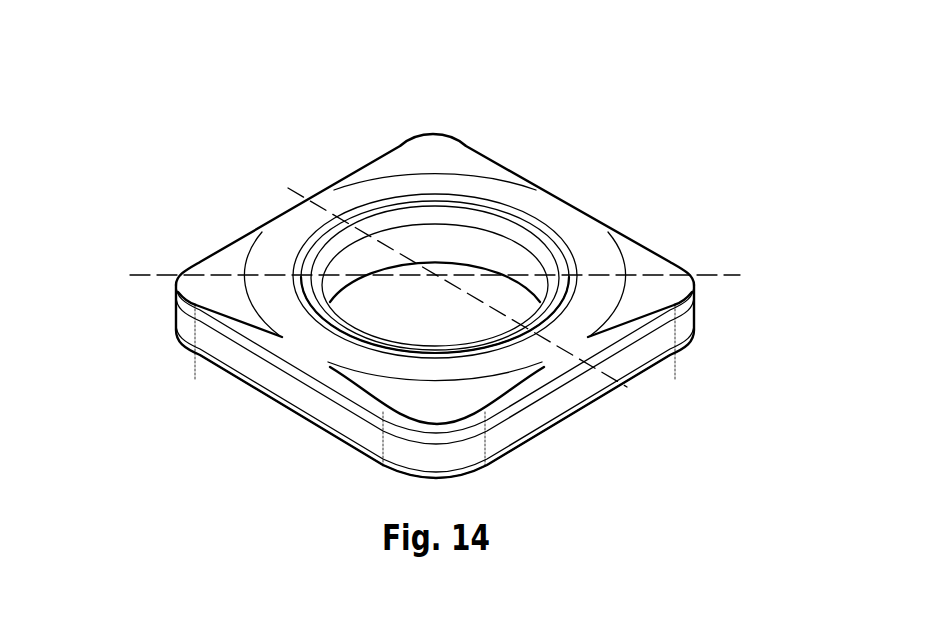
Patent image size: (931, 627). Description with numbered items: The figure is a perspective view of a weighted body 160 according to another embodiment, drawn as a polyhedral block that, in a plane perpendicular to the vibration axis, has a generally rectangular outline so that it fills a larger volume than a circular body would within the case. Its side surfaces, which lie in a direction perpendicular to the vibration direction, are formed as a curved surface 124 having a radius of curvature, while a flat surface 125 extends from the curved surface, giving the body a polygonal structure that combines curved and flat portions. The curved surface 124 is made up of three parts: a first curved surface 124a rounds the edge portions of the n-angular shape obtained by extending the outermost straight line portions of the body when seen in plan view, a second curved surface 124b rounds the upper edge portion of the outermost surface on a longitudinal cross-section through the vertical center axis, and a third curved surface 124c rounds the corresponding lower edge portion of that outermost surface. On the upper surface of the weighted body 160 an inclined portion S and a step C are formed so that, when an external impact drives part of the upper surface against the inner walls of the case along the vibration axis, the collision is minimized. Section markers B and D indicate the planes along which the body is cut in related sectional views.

The weighted body 160 is at (431, 86).
The flat surface 125 is at (494, 188).
The curved surface 124 is at (428, 391).
The first curved surface 124a is at (418, 461).
The second curved surface 124b is at (260, 357).
The third curved surface 124c is at (261, 396).
The step C is at (416, 141).
The inclined portion S is at (534, 228).
The section line B-B' B is at (287, 190).
The section line D-D' D is at (125, 277).